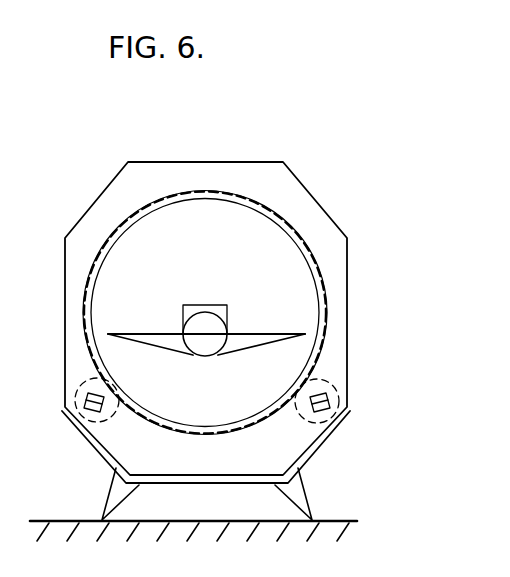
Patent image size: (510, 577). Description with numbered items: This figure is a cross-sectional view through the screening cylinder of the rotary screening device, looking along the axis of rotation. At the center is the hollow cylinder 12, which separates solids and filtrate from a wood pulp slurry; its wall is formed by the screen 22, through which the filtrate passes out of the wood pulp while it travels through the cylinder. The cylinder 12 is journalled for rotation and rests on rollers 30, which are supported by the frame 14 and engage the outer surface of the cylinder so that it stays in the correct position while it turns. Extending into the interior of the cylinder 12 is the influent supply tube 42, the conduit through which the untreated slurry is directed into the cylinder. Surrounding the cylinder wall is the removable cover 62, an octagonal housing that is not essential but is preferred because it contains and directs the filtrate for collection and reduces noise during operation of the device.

The hollow cylinder 12 is at (325, 283).
The frame 14 is at (313, 446).
The screen 22 is at (123, 222).
The rollers 30 is at (78, 384).
The influent supply tube 42 is at (206, 330).
The removable cover 62 is at (315, 197).